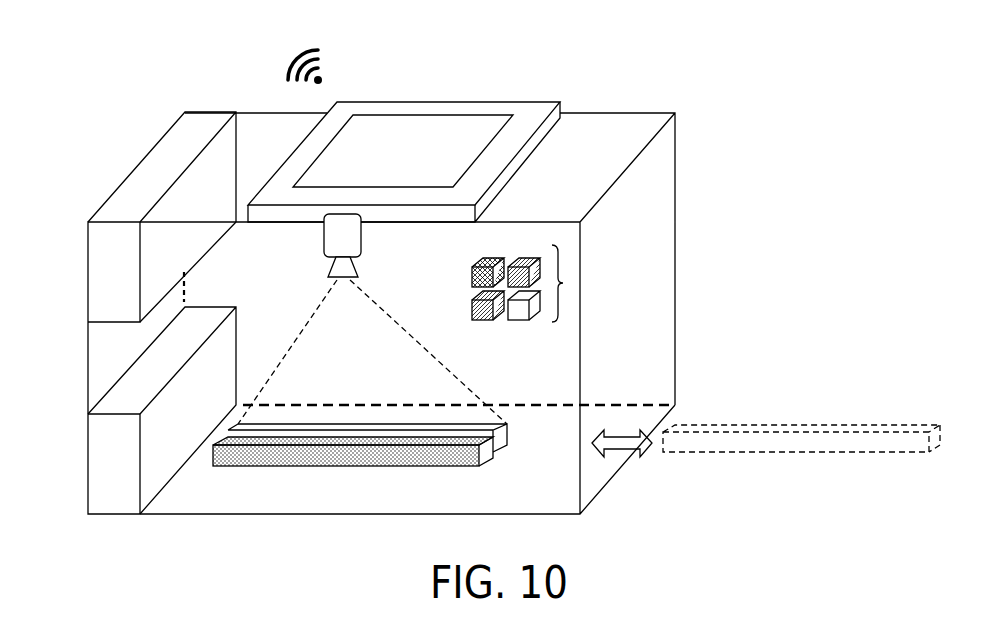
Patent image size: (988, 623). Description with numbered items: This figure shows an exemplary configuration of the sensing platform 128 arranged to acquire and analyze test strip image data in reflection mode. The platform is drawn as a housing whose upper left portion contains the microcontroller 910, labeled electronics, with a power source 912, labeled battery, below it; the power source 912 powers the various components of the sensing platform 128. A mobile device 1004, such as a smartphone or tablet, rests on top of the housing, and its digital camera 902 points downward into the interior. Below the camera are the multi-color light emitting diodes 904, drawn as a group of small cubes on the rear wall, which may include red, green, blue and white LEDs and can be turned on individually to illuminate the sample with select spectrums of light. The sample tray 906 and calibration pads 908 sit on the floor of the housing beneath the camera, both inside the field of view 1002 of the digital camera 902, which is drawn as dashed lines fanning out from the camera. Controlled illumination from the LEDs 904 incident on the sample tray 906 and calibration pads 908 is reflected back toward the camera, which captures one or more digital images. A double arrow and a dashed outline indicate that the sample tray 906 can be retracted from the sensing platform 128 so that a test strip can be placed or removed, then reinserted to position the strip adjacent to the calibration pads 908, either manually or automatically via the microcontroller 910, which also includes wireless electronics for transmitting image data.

The sensing platform 128 is at (150, 106).
The microcontroller 910 is at (100, 255).
The power source 912 is at (97, 465).
The mobile device 1004 is at (530, 108).
The digital camera 902 is at (361, 243).
The field of view 1002 is at (310, 304).
The multi-color light emitting diodes 904 is at (565, 283).
The calibration pads 908 is at (445, 467).
The sample tray 906 is at (505, 432).